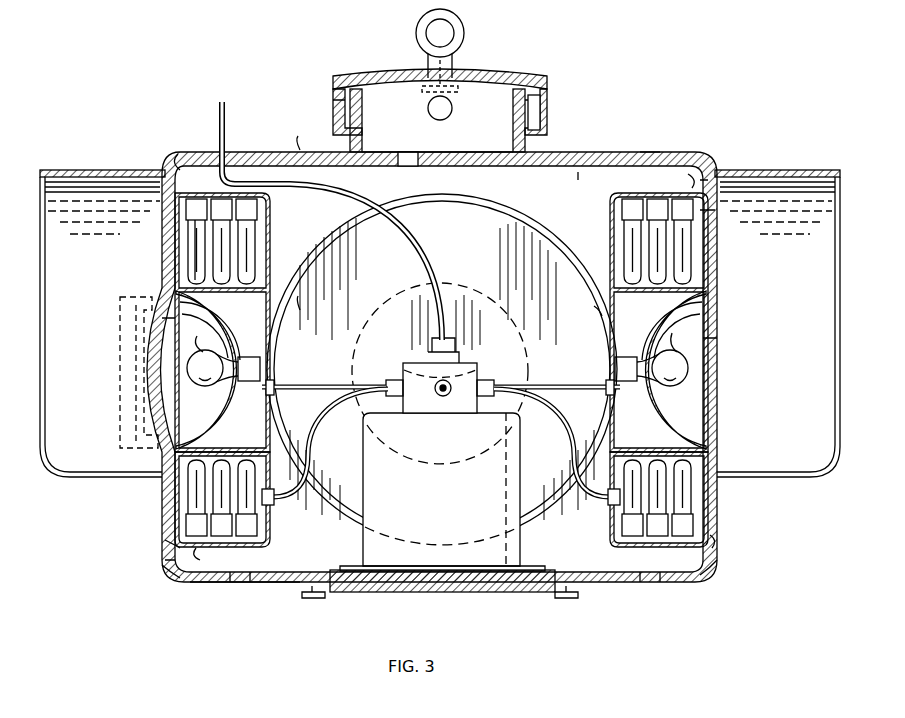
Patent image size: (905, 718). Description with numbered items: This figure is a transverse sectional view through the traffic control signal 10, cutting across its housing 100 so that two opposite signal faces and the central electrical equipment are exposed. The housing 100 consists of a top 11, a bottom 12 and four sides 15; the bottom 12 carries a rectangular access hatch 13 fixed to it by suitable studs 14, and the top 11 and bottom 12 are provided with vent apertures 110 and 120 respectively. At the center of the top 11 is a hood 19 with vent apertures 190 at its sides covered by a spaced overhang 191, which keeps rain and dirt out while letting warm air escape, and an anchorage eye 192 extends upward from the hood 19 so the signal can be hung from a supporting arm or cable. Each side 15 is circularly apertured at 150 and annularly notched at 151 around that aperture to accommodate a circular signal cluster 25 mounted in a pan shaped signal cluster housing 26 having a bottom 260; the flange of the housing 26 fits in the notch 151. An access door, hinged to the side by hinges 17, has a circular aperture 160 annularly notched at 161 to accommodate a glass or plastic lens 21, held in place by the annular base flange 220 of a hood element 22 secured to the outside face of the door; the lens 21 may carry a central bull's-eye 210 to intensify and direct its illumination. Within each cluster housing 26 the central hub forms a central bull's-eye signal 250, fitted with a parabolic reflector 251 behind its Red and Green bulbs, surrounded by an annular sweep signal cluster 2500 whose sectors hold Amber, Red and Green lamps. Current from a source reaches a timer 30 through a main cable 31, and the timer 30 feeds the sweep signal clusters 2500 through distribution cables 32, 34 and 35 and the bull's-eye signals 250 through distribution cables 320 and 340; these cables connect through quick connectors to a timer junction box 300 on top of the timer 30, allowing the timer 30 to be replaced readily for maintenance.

The traffic control signal 10 is at (570, 150).
The top 11 is at (300, 150).
The bottom 12 is at (205, 586).
The rectangular access hatch 13 is at (440, 592).
The studs 14 is at (560, 598).
The side 15 is at (578, 180).
The hinges 17 is at (120, 378).
The hood 19 is at (532, 88).
The lens 21 is at (170, 230).
The hood element 22 is at (98, 168).
The signal cluster 25 is at (360, 230).
The signal cluster housing 26 is at (270, 257).
The timer 30 is at (380, 484).
The main cable 31 is at (226, 124).
The distribution cable 32 is at (325, 447).
The distribution cable 34 is at (557, 447).
The distribution cable 35 is at (440, 400).
The housing 100 is at (640, 152).
The vent apertures 110 is at (415, 166).
The vent apertures 120 is at (255, 585).
The circular aperture 150 is at (200, 548).
The annular notch 151 is at (196, 160).
The circular aperture 160 is at (178, 542).
The annular notch 161 is at (165, 560).
The vent apertures 190 is at (340, 112).
The spaced overhang 191 is at (545, 105).
The anchorage eye 192 is at (463, 30).
The bull's-eye 210 is at (160, 318).
The annular base flange 220 is at (168, 570).
The central bull's-eye signal 250 is at (175, 344).
The reflector 251 is at (600, 314).
The bottom 260 is at (410, 206).
The timer junction box 300 is at (455, 408).
The distribution cable 320 is at (292, 380).
The distribution cable 340 is at (548, 380).
The annular sweep signal cluster 2500 is at (192, 262).